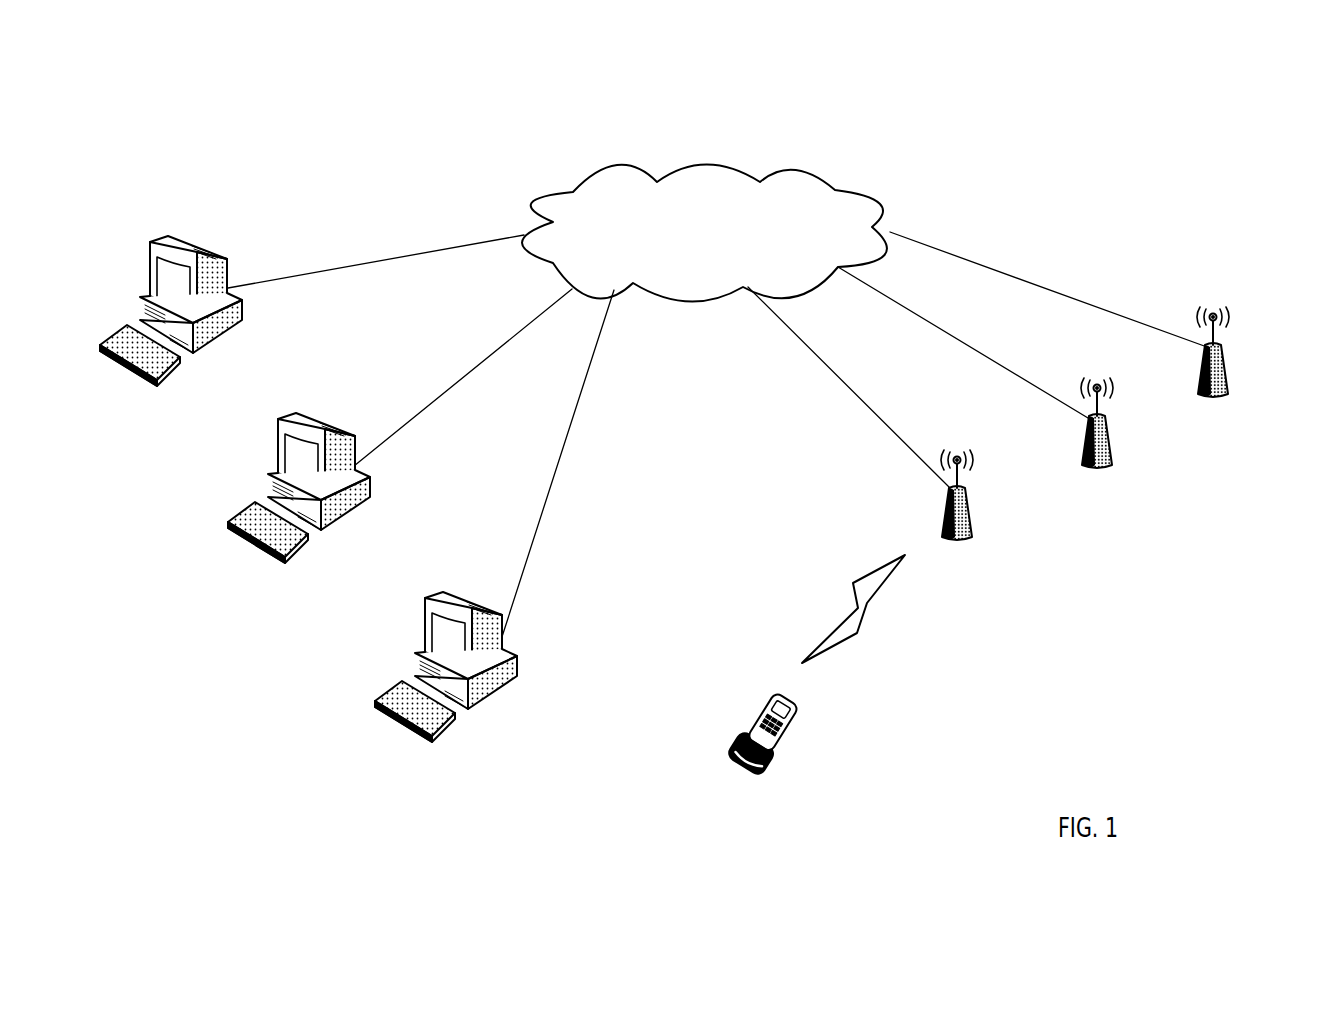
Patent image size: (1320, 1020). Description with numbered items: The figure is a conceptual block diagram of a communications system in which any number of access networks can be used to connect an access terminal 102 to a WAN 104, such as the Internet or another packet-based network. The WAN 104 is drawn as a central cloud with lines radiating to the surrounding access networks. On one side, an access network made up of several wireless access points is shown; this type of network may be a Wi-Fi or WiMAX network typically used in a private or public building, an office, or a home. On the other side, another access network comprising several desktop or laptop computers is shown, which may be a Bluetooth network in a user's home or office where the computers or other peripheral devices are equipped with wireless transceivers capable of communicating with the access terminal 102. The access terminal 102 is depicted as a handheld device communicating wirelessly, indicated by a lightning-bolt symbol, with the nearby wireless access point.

The access terminal 102 is at (797, 728).
The WAN 104 is at (708, 163).